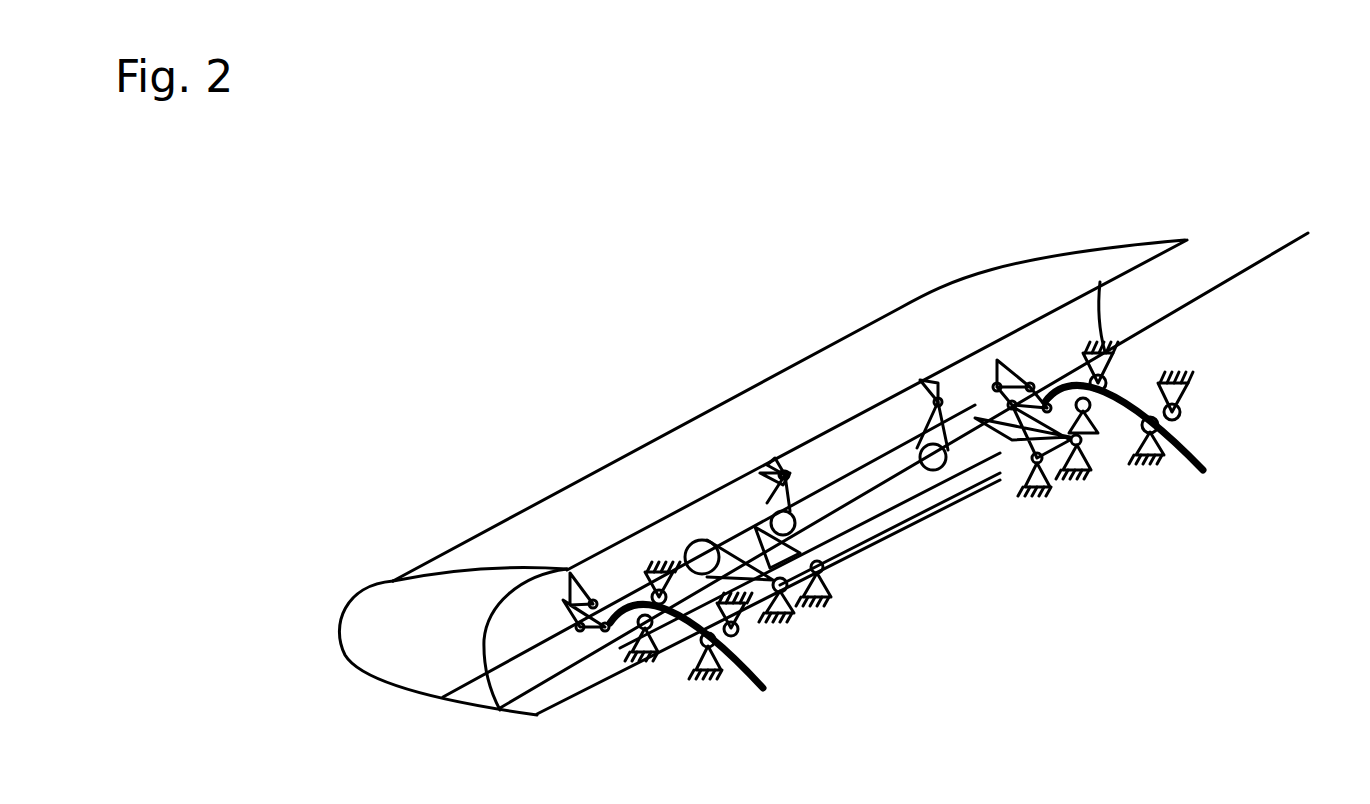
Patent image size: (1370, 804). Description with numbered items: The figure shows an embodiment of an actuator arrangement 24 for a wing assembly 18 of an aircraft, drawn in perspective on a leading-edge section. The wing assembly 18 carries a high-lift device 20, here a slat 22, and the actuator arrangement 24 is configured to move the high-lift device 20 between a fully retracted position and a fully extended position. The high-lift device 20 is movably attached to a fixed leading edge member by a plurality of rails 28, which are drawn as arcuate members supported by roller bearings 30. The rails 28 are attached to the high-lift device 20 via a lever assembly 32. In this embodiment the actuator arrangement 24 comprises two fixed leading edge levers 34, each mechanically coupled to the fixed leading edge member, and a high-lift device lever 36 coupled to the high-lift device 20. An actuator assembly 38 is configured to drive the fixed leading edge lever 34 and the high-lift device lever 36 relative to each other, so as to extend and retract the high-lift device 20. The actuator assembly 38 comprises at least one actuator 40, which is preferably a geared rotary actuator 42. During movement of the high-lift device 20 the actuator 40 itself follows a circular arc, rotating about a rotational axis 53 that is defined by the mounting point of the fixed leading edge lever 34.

The wing assembly 18 is at (1200, 170).
The high-lift device 20 is at (596, 420).
The slat 22 is at (657, 392).
The actuator arrangement 24 is at (884, 620).
The rails 28 is at (752, 688).
The roller bearings 30 is at (660, 684).
The lever assembly 32 is at (530, 615).
The fixed leading edge lever 34 is at (800, 550).
The high-lift device lever 36 is at (795, 480).
The actuator assembly 38 is at (955, 555).
The actuator 40 is at (713, 527).
The geared rotary actuator 42 is at (708, 530).
The rotational axis 53 is at (797, 587).